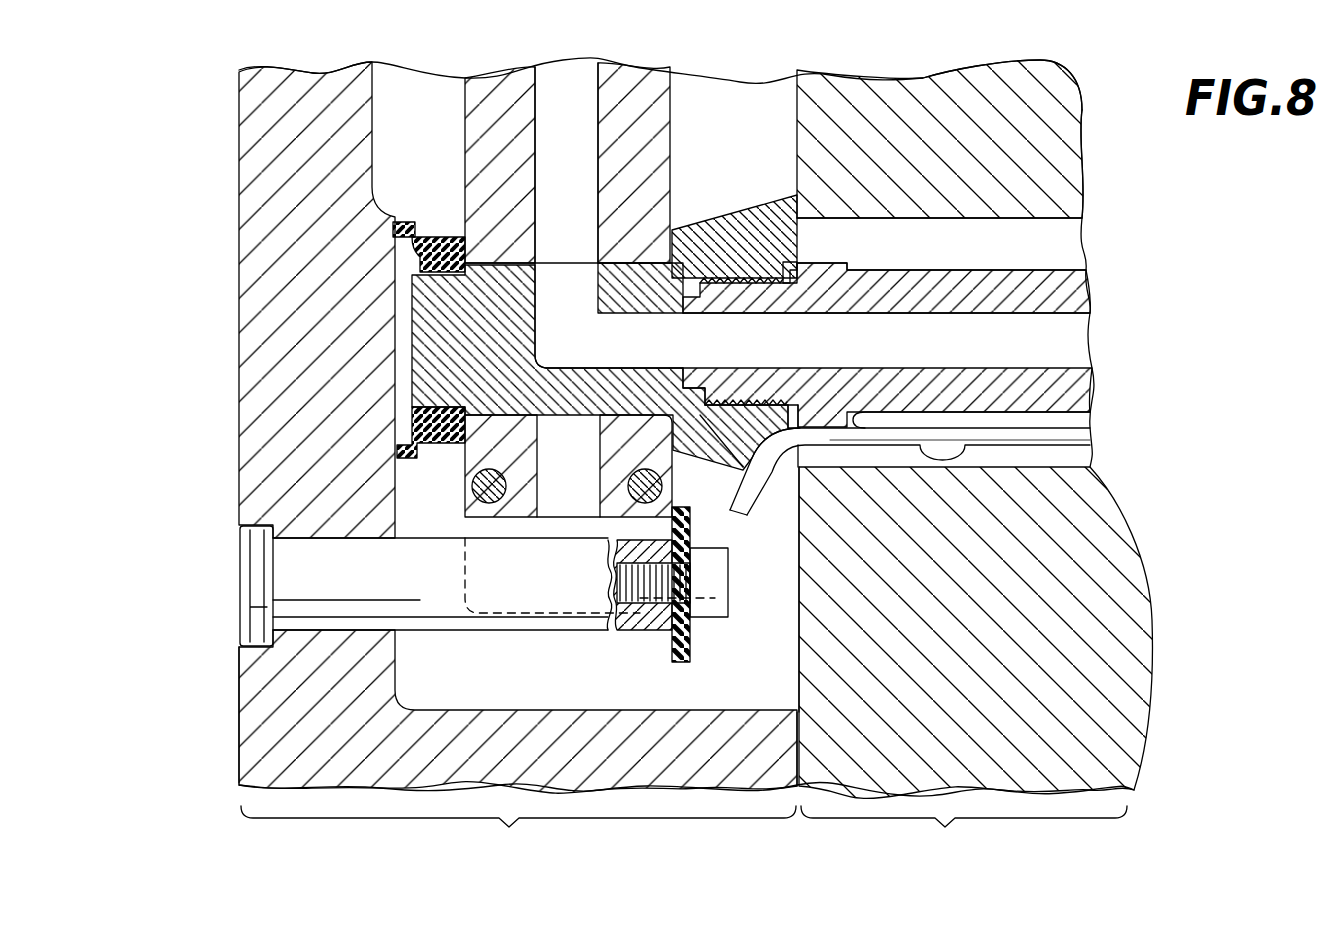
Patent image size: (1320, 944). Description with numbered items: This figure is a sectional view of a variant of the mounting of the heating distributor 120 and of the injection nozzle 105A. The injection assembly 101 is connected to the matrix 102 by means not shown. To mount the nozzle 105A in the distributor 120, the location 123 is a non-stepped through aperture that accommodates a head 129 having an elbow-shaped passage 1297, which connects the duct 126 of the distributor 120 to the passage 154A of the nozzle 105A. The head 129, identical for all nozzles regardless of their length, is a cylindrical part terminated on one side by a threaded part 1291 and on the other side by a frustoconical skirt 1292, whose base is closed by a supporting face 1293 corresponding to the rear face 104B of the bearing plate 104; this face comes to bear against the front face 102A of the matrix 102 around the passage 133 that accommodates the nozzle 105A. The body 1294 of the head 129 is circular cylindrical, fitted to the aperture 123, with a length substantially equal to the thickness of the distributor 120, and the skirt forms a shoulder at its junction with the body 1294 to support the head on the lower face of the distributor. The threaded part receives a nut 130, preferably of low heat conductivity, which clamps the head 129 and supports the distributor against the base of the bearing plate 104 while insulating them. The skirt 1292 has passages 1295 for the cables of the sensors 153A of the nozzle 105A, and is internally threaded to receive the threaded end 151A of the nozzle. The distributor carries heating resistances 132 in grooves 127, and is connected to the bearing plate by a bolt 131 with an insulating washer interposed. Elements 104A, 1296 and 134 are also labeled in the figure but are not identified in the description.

The injection assembly 101 is at (518, 837).
The matrix 102 is at (975, 667).
The front face of the matrix 102A is at (786, 605).
The bearing plate 104 is at (270, 737).
The outer surface of housing wall 104A is at (238, 705).
The rear face of the bearing plate 104B is at (790, 717).
The injection nozzle 105A is at (1073, 290).
The heating distributor 120 is at (673, 97).
The non-stepped through aperture 123 is at (627, 262).
The duct 126 is at (570, 82).
The grooves 127 is at (468, 478).
The head 129 is at (412, 333).
The threaded part 1291 is at (430, 277).
The frustoconical skirt 1292 is at (707, 228).
The supporting face 1293 is at (787, 200).
The body 1294 is at (490, 353).
The passages 1295 is at (748, 205).
The threaded coupling 1296 is at (745, 408).
The passage 1297 is at (560, 303).
The nut 130 is at (398, 222).
The bolt 131 is at (640, 580).
The heating resistances 132 is at (485, 493).
The passage 133 is at (1060, 233).
The washer 134 is at (670, 645).
The threaded end of the nozzle 151A is at (790, 367).
The sensors 153A is at (963, 453).
The passage of the nozzle 154A is at (1080, 350).